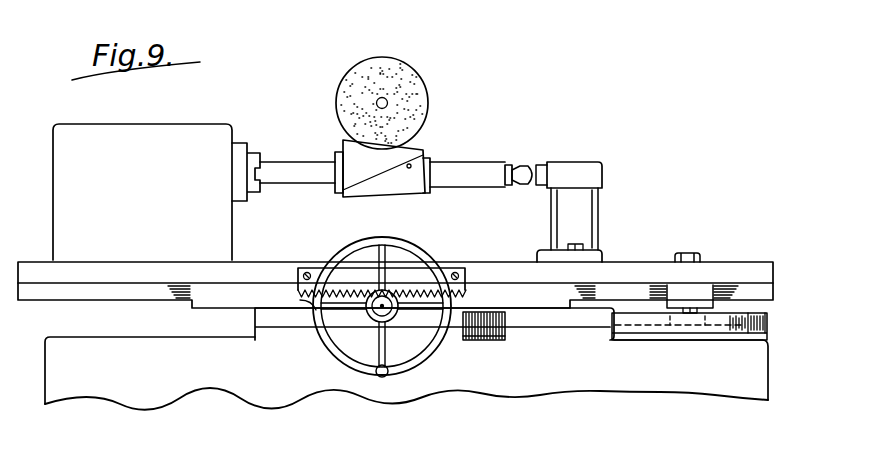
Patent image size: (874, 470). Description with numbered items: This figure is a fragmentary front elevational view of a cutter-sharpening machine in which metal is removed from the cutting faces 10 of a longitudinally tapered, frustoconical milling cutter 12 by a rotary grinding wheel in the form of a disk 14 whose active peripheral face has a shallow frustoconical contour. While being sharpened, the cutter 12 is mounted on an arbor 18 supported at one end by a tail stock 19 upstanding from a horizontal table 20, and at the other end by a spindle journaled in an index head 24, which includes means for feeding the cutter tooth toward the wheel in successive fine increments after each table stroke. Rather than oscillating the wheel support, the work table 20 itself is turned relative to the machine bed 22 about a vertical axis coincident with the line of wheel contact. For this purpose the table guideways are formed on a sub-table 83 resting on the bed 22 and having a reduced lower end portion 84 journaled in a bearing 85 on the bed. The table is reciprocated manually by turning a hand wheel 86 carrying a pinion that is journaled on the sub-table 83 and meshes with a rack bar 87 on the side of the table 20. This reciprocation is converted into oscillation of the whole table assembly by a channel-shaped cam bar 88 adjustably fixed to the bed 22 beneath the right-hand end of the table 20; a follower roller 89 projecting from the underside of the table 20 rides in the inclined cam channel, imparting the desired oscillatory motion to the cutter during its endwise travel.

The cutting face 10 is at (411, 164).
The milling cutter 12 is at (403, 199).
The disk 14 is at (413, 83).
The arbor 18 is at (303, 168).
The tail stock 19 is at (577, 170).
The table 20 is at (739, 266).
The machine bed 22 is at (186, 392).
The index head 24 is at (202, 134).
The sub-table 83 is at (212, 297).
The reduced lower end portion 84 is at (507, 323).
The bearing 85 is at (490, 337).
The hand wheel 86 is at (422, 355).
The rack bar 87 is at (448, 266).
The cam bar 88 is at (754, 323).
The follower roller 89 is at (672, 321).